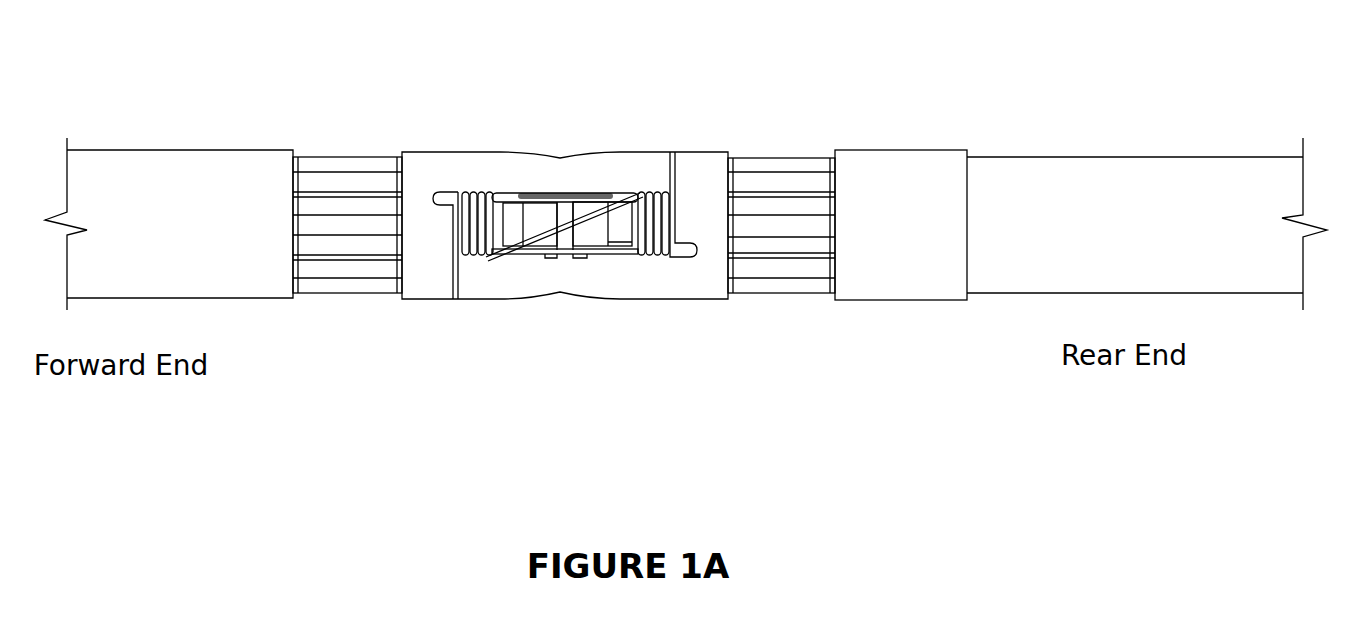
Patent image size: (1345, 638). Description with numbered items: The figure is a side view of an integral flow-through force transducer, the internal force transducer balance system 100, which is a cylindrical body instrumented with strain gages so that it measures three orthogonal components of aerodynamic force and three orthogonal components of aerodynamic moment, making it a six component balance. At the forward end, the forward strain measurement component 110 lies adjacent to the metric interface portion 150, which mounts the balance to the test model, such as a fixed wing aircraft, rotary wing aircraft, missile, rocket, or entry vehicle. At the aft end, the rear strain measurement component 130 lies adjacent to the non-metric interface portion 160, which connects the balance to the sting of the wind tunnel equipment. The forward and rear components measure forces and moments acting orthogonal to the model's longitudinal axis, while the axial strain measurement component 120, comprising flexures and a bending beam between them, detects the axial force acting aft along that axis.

The internal force transducer balance system 100 is at (388, 46).
The forward strain measurement component 110 is at (288, 332).
The axial strain measurement component 120 is at (722, 335).
The rear strain measurement component 130 is at (728, 333).
The metric interface portion 150 is at (187, 165).
The non-metric interface portion 160 is at (1210, 175).